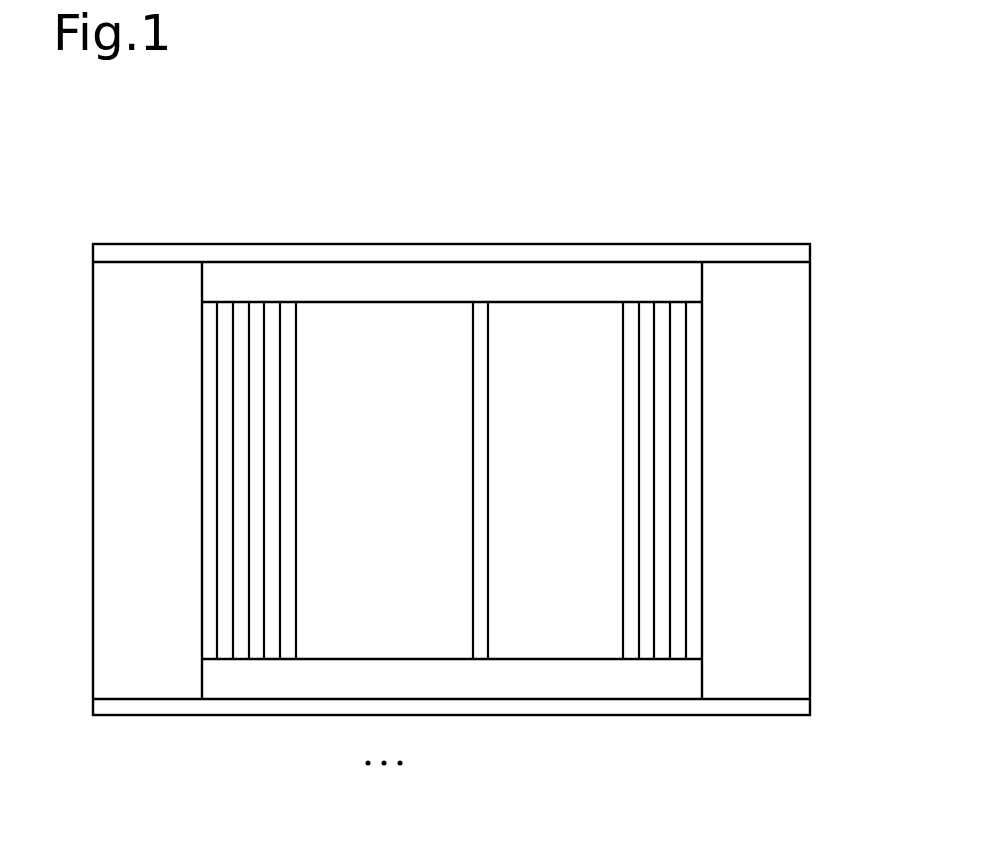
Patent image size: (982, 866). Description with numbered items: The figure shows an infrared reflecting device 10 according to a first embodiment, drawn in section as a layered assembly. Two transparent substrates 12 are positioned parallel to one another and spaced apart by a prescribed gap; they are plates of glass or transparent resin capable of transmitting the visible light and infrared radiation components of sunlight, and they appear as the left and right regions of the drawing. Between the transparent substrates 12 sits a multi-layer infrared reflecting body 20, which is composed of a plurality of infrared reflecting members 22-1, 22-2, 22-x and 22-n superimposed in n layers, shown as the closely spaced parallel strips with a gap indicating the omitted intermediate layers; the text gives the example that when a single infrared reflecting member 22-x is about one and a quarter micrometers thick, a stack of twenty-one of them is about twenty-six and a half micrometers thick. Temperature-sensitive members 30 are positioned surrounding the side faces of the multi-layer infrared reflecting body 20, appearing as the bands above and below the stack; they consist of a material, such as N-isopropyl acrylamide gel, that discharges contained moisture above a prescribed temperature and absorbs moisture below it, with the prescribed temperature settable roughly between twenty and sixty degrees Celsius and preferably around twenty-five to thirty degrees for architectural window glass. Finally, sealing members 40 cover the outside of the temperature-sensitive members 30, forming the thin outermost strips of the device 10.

The infrared reflecting device 10 is at (155, 190).
The transparent substrate 12 is at (112, 436).
The multi-layer infrared reflecting body 20 is at (452, 575).
The infrared reflecting member 22-1 is at (209, 651).
The infrared reflecting member 22-2 is at (224, 651).
The infrared reflecting member 22-x is at (478, 651).
The infrared reflecting member 22-n is at (712, 540).
The temperature-sensitive member 30 is at (665, 270).
The sealing member 40 is at (778, 247).